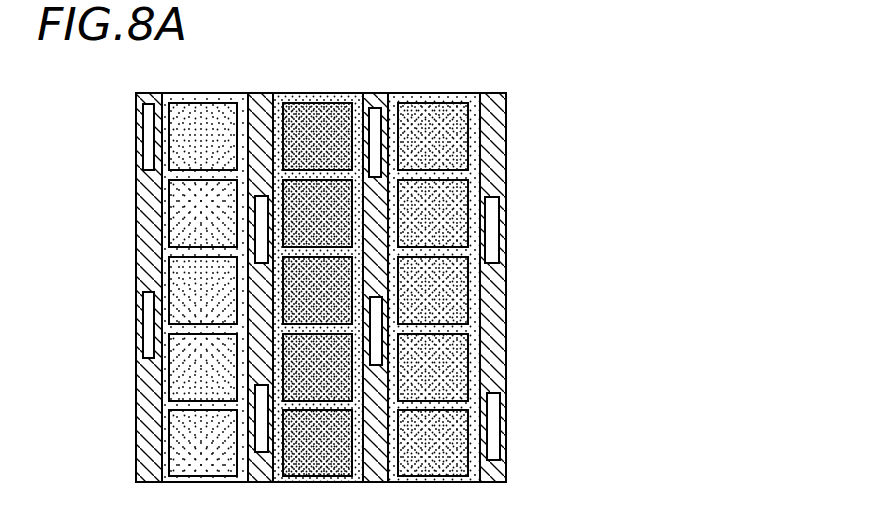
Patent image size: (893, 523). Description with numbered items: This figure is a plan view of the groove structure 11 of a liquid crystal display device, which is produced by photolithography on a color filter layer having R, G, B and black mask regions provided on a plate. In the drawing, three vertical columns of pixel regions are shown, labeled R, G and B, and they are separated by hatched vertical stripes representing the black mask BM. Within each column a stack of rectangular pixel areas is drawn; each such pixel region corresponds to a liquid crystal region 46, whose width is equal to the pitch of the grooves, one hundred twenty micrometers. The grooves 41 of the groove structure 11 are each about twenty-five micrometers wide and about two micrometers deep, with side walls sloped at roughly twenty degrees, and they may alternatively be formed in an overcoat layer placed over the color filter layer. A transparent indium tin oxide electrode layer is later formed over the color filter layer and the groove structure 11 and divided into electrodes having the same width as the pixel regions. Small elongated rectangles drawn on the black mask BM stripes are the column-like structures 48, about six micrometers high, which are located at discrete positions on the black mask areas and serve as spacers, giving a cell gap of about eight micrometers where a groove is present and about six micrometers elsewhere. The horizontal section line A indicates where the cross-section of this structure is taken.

The groove structure 11 is at (475, 92).
The R region R is at (217, 120).
The G region G is at (323, 120).
The B region B is at (487, 253).
The black mask BM is at (490, 166).
The liquid crystal region 46 is at (447, 217).
The groove 41 is at (432, 253).
The column-like structure 48 is at (493, 430).
The section line A-A' A is at (308, 442).